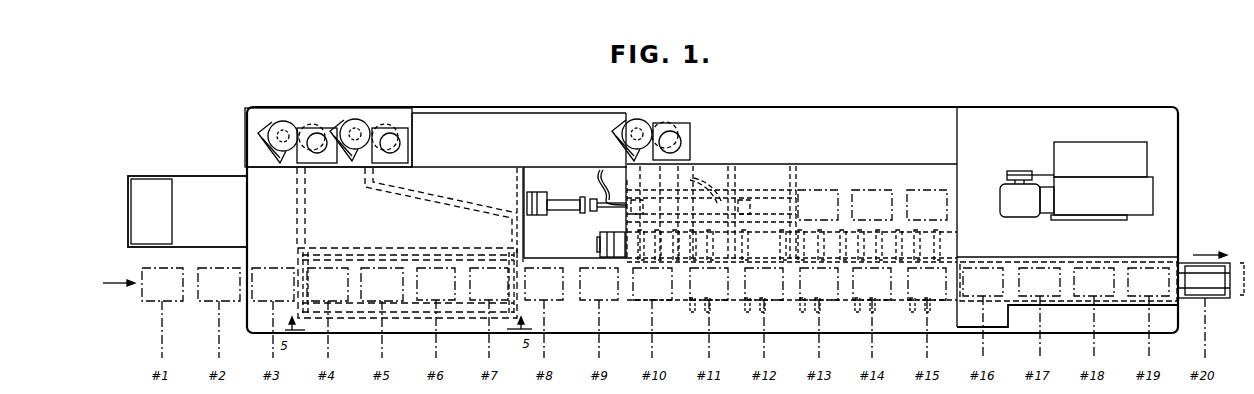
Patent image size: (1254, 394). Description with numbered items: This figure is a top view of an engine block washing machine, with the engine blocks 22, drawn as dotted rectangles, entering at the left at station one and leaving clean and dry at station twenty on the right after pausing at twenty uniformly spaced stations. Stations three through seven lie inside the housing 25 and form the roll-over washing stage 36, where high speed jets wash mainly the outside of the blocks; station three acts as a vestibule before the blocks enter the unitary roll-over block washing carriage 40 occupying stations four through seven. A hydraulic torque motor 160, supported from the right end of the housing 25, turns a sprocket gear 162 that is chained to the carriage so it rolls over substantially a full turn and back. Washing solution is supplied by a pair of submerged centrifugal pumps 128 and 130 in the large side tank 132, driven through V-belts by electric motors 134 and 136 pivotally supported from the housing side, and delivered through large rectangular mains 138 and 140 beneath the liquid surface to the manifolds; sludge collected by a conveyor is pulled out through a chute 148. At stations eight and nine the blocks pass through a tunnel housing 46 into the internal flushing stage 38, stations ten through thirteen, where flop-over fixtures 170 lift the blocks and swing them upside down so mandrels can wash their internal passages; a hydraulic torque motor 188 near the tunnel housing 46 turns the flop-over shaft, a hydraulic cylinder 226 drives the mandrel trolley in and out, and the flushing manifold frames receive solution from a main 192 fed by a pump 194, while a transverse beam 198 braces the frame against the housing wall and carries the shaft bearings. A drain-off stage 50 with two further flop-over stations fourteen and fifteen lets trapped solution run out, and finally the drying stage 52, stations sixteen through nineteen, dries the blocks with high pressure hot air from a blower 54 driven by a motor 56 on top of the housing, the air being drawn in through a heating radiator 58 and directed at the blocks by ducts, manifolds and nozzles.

The engine blocks 22 is at (142, 268).
The housing 25 is at (485, 167).
The roll-over washing stage 36 is at (253, 180).
The internal flushing stage 38 is at (737, 158).
The roll-over block washing carriage 40 is at (375, 247).
The tunnel housing 46 is at (560, 258).
The drain-off stage 50 is at (917, 158).
The drying stage 52 is at (1043, 146).
The blower 54 is at (1138, 212).
The motor 56 is at (1030, 210).
The heating radiator 58 is at (1134, 143).
The centrifugal pump 128 is at (318, 123).
The centrifugal pump 130 is at (387, 121).
The side tank 132 is at (297, 107).
The electric motor 134 is at (270, 125).
The electric motor 136 is at (354, 124).
The rectangular main 138 is at (308, 215).
The rectangular main 140 is at (427, 193).
The chute 148 is at (162, 177).
The hydraulic torque motor 160 is at (540, 196).
The sprocket gear 162 is at (521, 178).
The flop-over fixtures 170 is at (923, 307).
The hydraulic torque motor 188 is at (606, 232).
The main 192 is at (621, 176).
The pump 194 is at (670, 122).
The transverse beam 198 is at (638, 125).
The hydraulic cylinder 226 is at (565, 211).